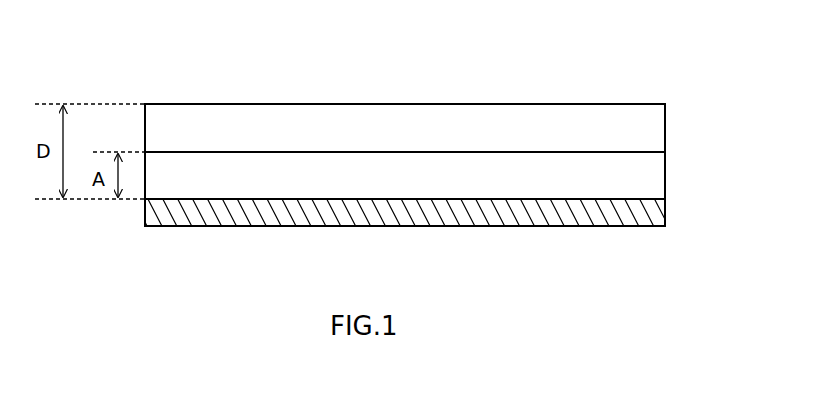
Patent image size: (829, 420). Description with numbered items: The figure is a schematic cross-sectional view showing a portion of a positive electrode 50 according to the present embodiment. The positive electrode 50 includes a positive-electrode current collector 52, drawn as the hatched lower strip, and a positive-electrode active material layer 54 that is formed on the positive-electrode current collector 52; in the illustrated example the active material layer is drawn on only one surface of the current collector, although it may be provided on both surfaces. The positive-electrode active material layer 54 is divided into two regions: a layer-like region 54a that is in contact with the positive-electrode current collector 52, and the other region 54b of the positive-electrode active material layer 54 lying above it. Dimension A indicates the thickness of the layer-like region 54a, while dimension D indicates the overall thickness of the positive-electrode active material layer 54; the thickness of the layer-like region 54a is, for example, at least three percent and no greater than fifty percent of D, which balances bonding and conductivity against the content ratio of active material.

The positive electrode 50 is at (590, 76).
The positive-electrode current collector 52 is at (665, 213).
The positive-electrode active material layer 54 is at (690, 104).
The layer-like region 54a is at (272, 165).
The other region 54b is at (380, 116).